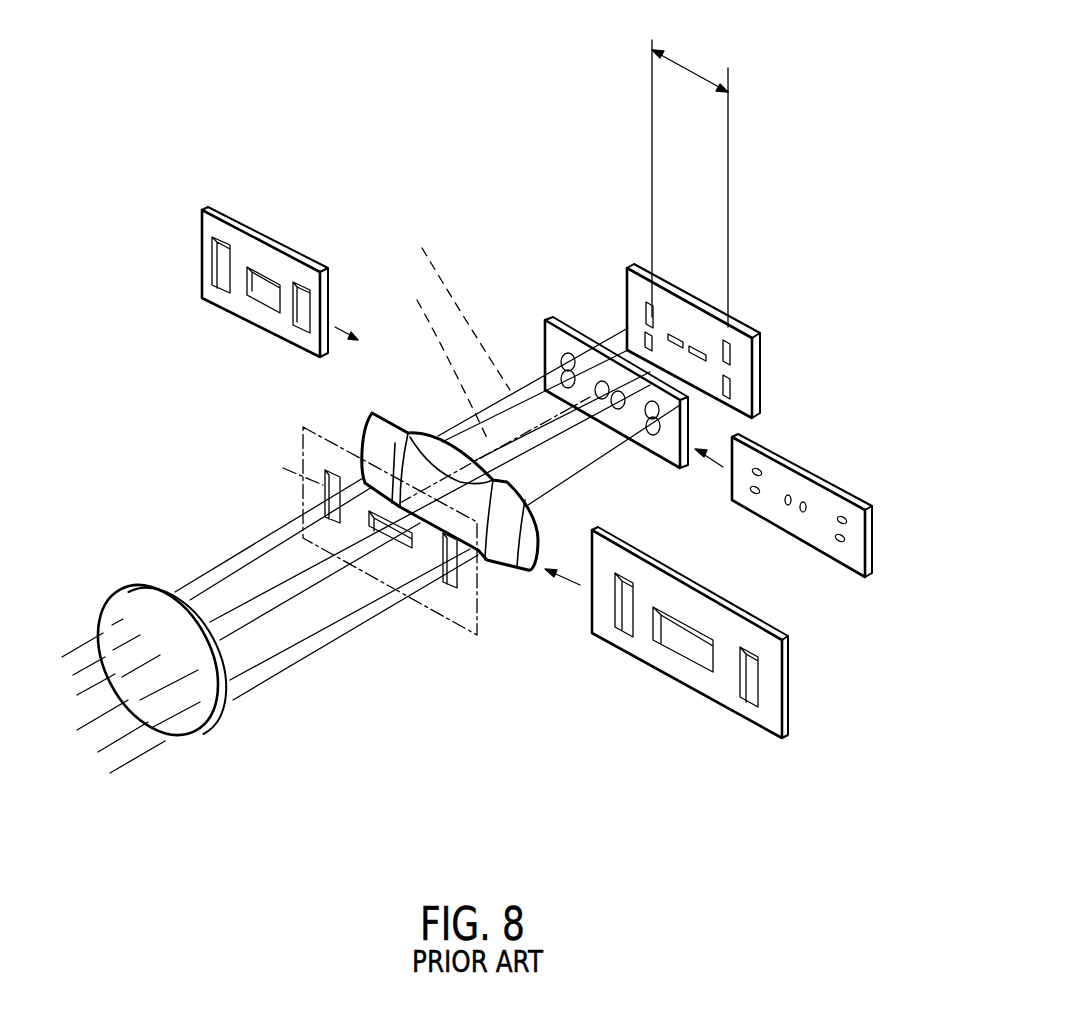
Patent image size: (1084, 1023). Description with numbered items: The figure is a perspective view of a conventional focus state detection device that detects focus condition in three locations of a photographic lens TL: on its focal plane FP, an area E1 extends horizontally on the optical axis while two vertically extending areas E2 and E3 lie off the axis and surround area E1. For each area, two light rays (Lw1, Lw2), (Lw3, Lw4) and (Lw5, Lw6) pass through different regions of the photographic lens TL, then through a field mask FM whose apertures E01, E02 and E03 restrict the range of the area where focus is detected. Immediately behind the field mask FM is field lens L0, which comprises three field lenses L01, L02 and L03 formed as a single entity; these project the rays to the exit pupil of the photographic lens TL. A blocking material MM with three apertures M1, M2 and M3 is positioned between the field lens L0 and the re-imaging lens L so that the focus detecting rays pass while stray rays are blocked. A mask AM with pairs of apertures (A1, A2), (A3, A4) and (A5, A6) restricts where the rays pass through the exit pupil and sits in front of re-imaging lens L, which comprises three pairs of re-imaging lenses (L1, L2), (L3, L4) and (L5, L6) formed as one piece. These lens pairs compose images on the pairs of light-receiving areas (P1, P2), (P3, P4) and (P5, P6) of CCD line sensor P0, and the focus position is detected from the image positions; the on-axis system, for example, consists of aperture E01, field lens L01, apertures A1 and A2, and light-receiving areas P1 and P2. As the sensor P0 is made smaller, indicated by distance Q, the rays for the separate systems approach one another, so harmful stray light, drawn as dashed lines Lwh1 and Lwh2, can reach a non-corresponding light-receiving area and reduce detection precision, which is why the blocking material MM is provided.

The blocking material MM is at (202, 262).
The aperture M1 is at (267, 267).
The aperture M2 is at (305, 283).
The aperture M3 is at (218, 238).
The distance Q is at (690, 182).
The CCD line sensor P0 is at (757, 382).
The light-receiving area P1 is at (698, 346).
The light-receiving area P2 is at (672, 335).
The light-receiving area P3 is at (729, 376).
The light-receiving area P4 is at (727, 341).
The light-receiving area P5 is at (647, 334).
The light-receiving area P6 is at (646, 304).
The re-imaging lens L is at (545, 320).
The re-imaging lens L1 is at (619, 410).
The re-imaging lens L2 is at (601, 400).
The re-imaging lens L3 is at (652, 420).
The re-imaging lens L4 is at (655, 436).
The re-imaging lens L5 is at (537, 352).
The re-imaging lens L6 is at (566, 352).
The stray light ray Lwh1 is at (418, 358).
The stray light ray Lwh2 is at (440, 305).
The field lens L0 is at (532, 570).
The field lens L01 is at (438, 447).
The field lens L02 is at (505, 573).
The field lens L03 is at (366, 420).
The focal plane FP is at (331, 523).
The focus detecting area E1 is at (402, 548).
The focus detecting area E2 is at (452, 597).
The focus detecting area E3 is at (325, 482).
The photographic lens TL is at (153, 732).
The light ray Lw1 is at (287, 577).
The light ray Lw2 is at (250, 622).
The light ray Lw3 is at (308, 627).
The light ray Lw4 is at (248, 690).
The light ray Lw5 is at (197, 580).
The light ray Lw6 is at (222, 587).
The mask AM is at (873, 563).
The aperture A1 is at (803, 511).
The aperture A2 is at (788, 504).
The aperture A3 is at (840, 536).
The aperture A4 is at (842, 518).
The aperture A5 is at (755, 492).
The aperture A6 is at (760, 470).
The field mask FM is at (790, 650).
The aperture E01 is at (687, 655).
The aperture E02 is at (750, 705).
The aperture E03 is at (623, 632).